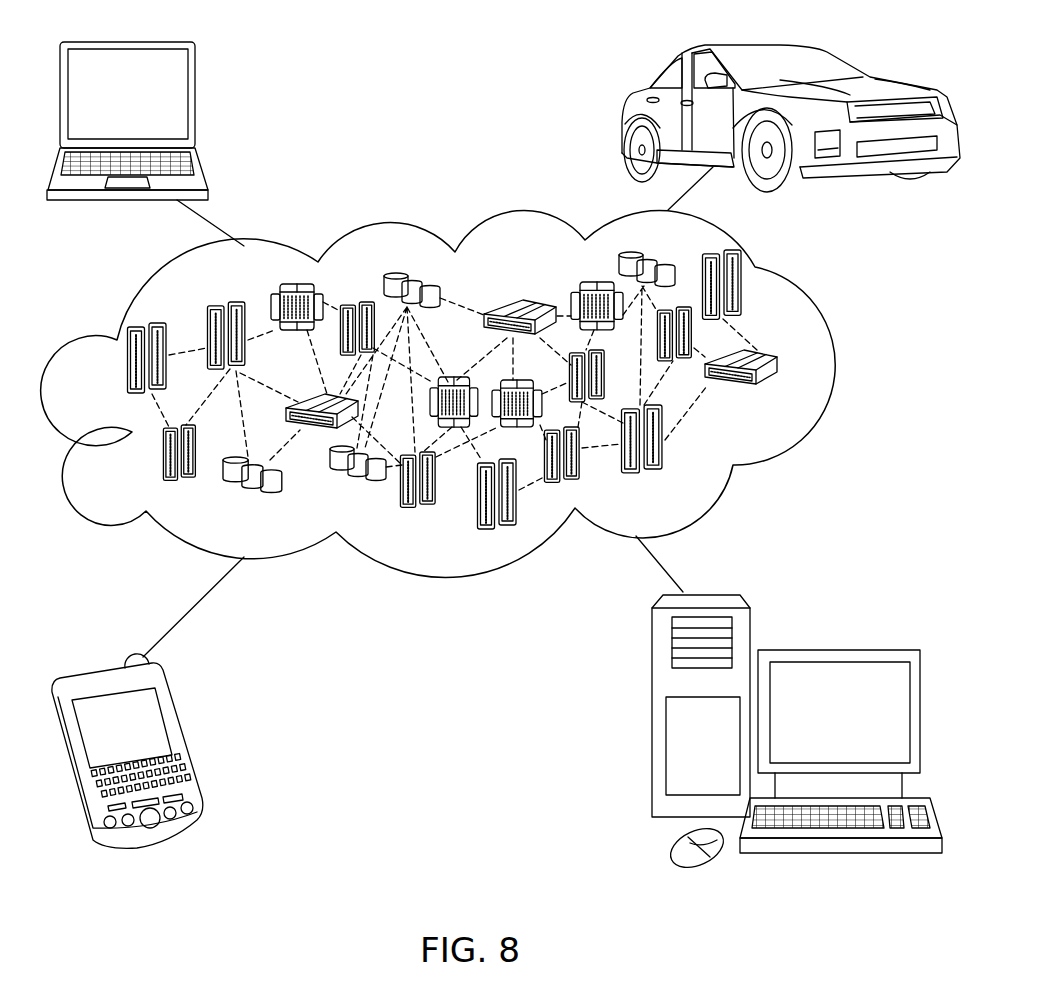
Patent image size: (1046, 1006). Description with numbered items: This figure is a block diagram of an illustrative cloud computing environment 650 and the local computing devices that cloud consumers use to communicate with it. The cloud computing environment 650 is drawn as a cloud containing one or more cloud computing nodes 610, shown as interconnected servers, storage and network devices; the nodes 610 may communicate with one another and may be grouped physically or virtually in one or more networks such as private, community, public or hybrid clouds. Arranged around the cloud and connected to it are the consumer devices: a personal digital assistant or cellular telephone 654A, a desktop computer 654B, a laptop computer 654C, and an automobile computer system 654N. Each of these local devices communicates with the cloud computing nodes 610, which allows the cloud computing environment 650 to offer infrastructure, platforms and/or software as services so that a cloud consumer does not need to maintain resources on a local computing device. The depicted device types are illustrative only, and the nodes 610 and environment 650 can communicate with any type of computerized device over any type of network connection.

The laptop computer 654C is at (197, 101).
The automobile computer system 654N is at (620, 112).
The cloud computing environment 650 is at (838, 366).
The cloud computing nodes 610 is at (781, 398).
The personal digital assistant or cellular telephone 654A is at (188, 740).
The desktop computer 654B is at (838, 650).